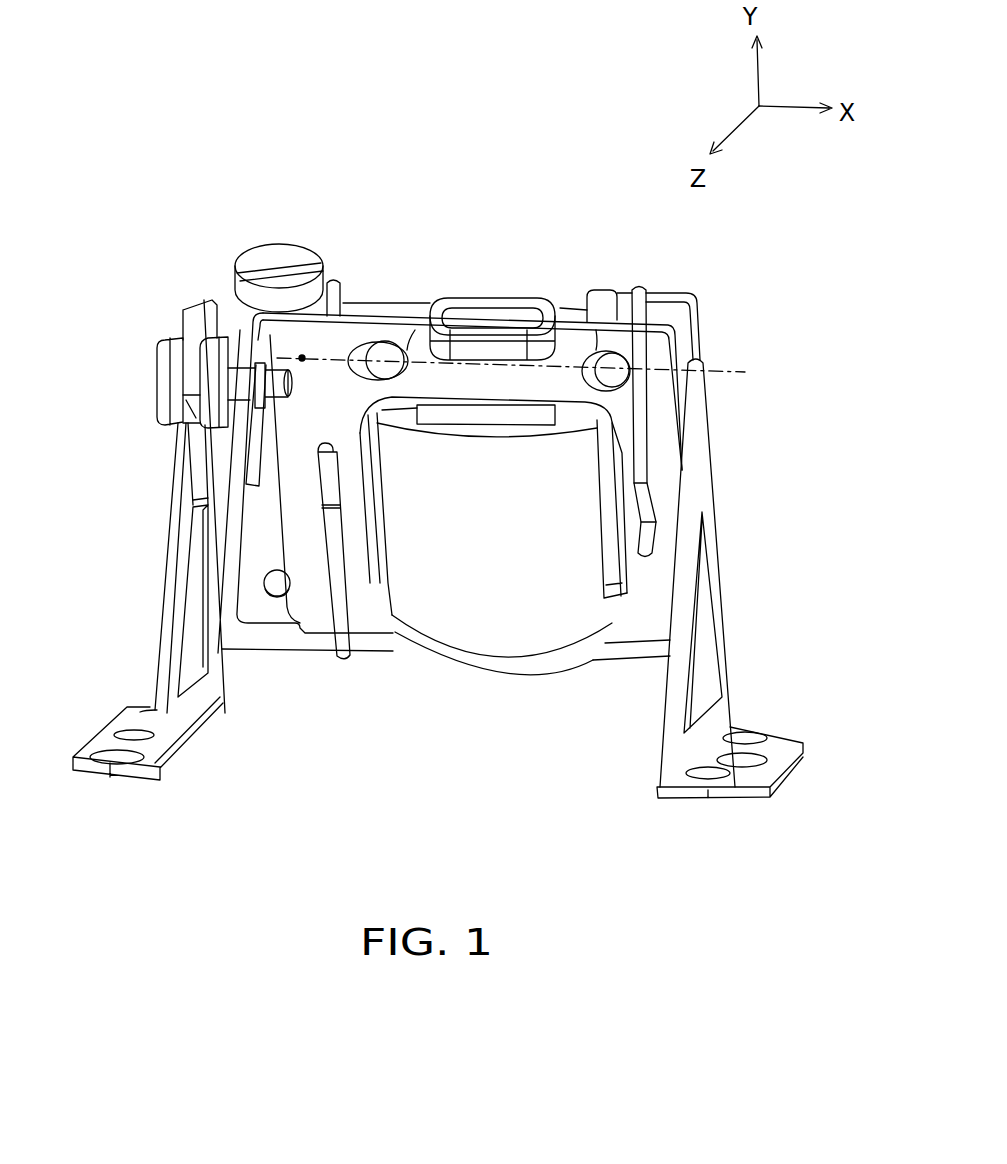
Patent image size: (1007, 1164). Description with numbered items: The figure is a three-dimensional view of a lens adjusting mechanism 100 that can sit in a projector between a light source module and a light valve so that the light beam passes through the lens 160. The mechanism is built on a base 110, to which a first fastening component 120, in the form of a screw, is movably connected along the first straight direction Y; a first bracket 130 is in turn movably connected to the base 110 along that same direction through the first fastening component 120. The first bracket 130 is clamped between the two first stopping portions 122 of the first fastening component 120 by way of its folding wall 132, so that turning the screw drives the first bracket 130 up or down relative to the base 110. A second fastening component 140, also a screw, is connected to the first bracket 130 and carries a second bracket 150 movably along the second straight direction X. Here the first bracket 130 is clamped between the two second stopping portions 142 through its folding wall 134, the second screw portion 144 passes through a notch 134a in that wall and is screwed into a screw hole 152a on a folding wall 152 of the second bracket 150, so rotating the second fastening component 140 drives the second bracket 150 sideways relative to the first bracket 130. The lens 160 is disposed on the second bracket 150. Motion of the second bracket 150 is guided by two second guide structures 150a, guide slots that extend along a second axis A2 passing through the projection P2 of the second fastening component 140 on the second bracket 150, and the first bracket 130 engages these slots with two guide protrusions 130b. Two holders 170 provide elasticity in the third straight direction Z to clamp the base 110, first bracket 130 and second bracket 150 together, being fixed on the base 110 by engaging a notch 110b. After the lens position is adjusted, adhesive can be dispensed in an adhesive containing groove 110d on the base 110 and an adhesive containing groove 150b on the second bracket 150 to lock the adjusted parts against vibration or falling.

The lens adjusting mechanism 100 is at (808, 863).
The base 110 is at (725, 713).
The notch 110b is at (615, 294).
The adhesive containing groove 110d is at (517, 298).
The first fastening component 120 is at (278, 227).
The first stopping portions 122 is at (258, 258).
The first bracket 130 is at (261, 612).
The guide protrusions 130b is at (385, 348).
The folding wall 132 is at (330, 280).
The folding wall 134 is at (197, 320).
The notch 134a is at (185, 404).
The second fastening component 140 is at (136, 416).
The second stopping portions 142 is at (170, 423).
The second screw portion 144 is at (207, 430).
The second bracket 150 is at (594, 311).
The second guide structures 150a is at (408, 341).
The adhesive containing groove 150b is at (482, 330).
The folding wall 152 is at (191, 398).
The screw hole 152a is at (260, 358).
The lens 160 is at (487, 632).
The holders 170 is at (639, 288).
The second axis A2 is at (525, 376).
The projection P2 is at (306, 362).